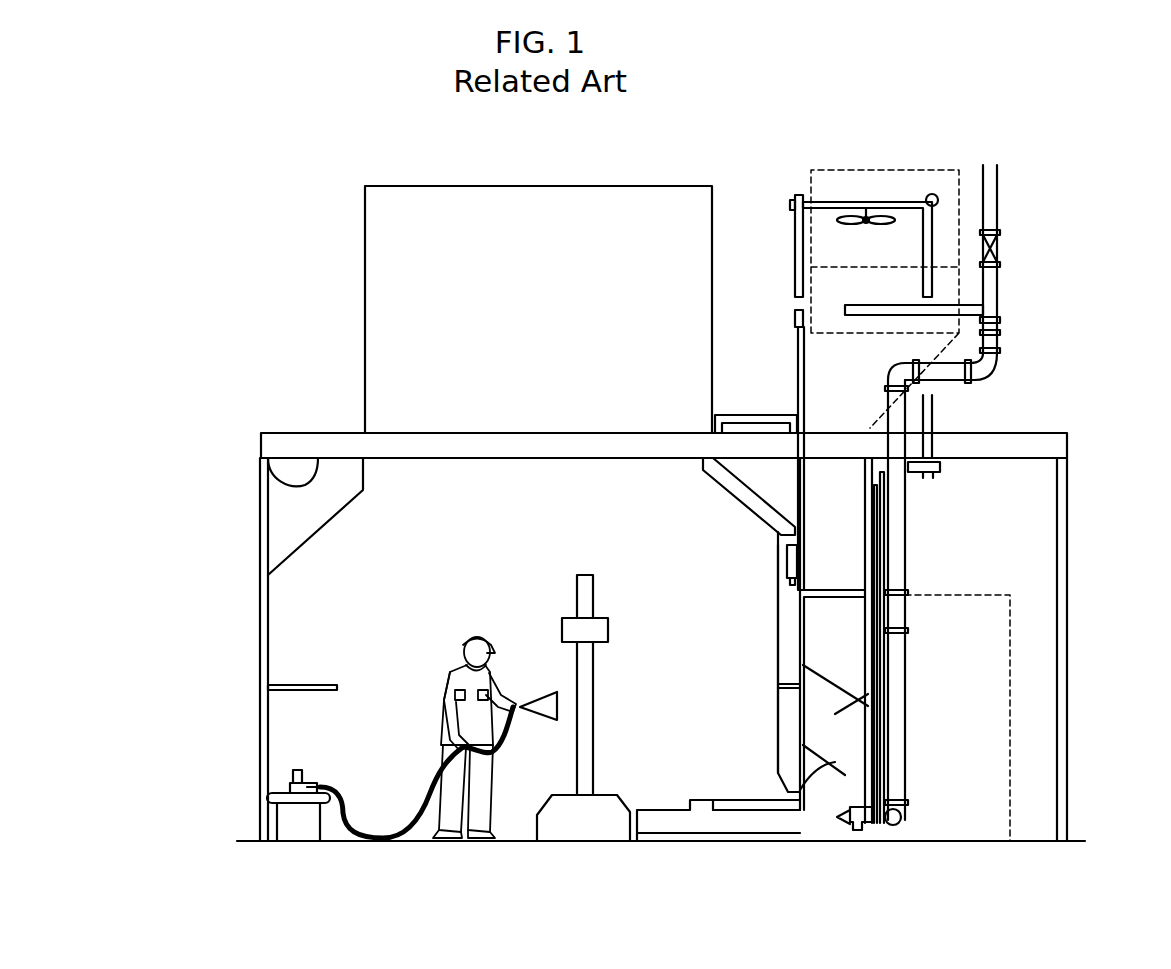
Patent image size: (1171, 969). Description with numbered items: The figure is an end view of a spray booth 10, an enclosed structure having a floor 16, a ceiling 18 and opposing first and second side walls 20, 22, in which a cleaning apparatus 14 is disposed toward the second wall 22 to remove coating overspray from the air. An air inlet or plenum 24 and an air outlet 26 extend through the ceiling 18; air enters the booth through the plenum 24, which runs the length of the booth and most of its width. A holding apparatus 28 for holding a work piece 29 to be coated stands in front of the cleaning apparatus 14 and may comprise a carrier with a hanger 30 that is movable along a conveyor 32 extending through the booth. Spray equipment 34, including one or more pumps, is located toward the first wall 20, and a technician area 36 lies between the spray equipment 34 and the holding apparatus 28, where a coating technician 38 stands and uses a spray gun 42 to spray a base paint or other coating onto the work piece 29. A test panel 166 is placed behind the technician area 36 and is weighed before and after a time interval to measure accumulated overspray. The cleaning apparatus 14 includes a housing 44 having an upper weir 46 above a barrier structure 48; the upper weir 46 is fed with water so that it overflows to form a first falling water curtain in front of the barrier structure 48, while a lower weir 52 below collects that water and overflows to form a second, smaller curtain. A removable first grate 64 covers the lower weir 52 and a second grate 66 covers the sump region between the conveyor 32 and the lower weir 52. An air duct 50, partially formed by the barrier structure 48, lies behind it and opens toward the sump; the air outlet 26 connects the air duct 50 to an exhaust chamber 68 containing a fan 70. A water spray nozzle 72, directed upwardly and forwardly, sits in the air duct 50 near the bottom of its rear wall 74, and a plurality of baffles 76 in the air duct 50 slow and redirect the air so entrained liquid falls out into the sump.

The spray booth 10 is at (1061, 384).
The cleaning apparatus 14 is at (912, 584).
The floor 16 is at (765, 822).
The ceiling 18 is at (265, 478).
The first side wall 20 is at (261, 607).
The second side wall 22 is at (1063, 682).
The plenum 24 is at (461, 450).
The air outlet 26 is at (838, 448).
The holding apparatus 28 is at (594, 709).
The work piece 29 is at (593, 703).
The hanger 30 is at (608, 632).
The conveyor 32 is at (575, 825).
The spray equipment 34 is at (312, 762).
The technician area 36 is at (404, 747).
The coating technician 38 is at (452, 652).
The spray gun 42 is at (542, 712).
The housing 44 is at (757, 600).
The upper weir 46 is at (777, 542).
The barrier structure 48 is at (778, 648).
The air duct 50 is at (836, 737).
The lower weir 52 is at (737, 810).
The first grate 64 is at (737, 800).
The second grate 66 is at (657, 808).
The exhaust chamber 68 is at (929, 270).
The fan 70 is at (882, 204).
The water spray nozzle 72 is at (858, 832).
The rear wall 74 is at (873, 731).
The baffles 76 is at (836, 656).
The test panel 166 is at (311, 683).